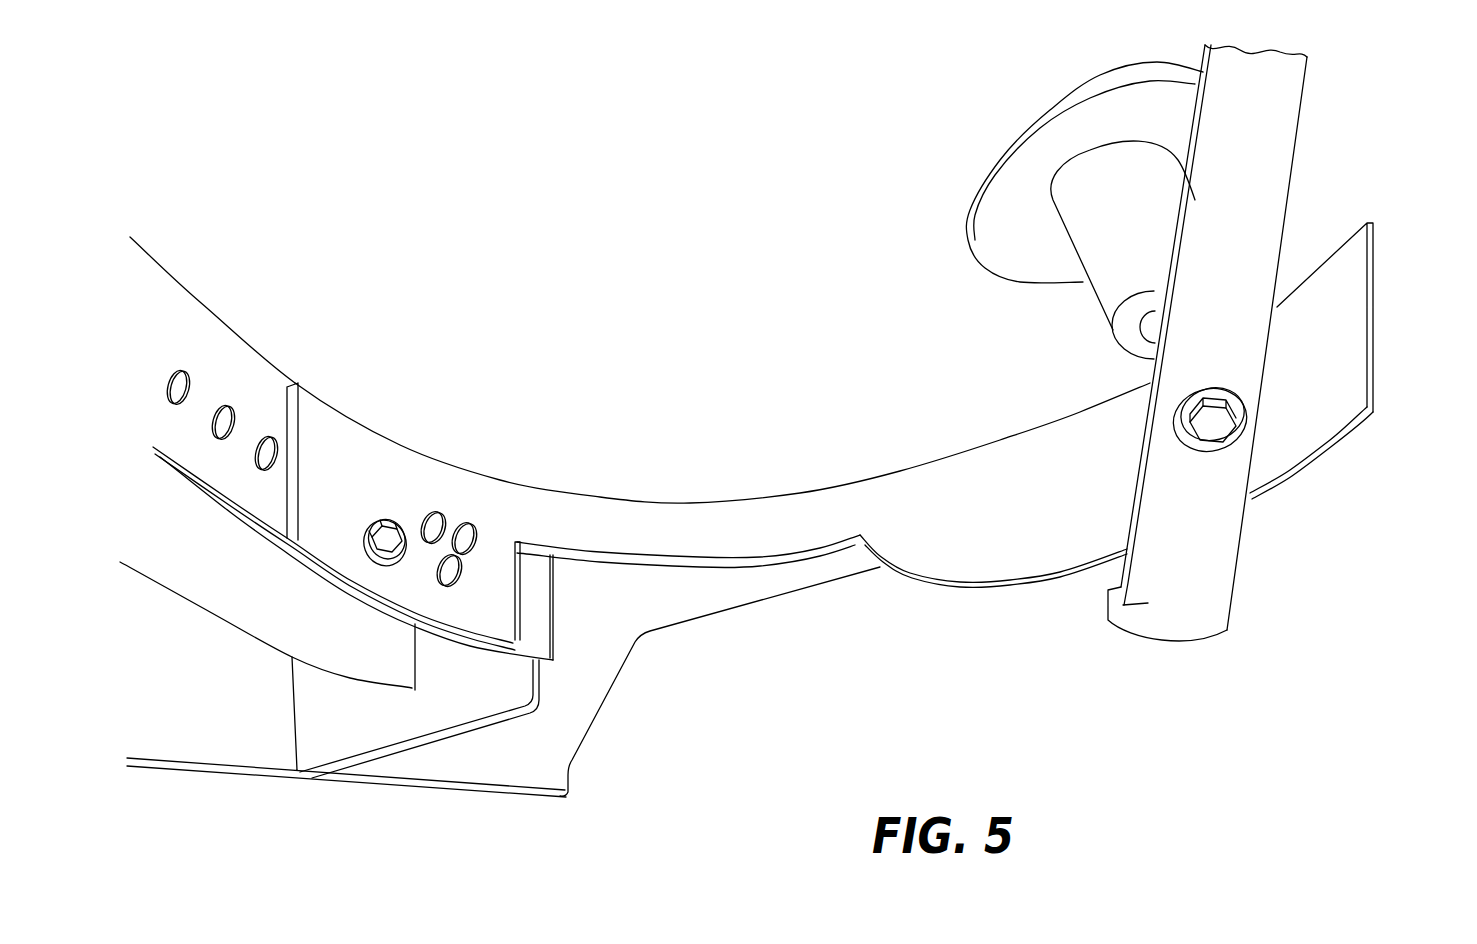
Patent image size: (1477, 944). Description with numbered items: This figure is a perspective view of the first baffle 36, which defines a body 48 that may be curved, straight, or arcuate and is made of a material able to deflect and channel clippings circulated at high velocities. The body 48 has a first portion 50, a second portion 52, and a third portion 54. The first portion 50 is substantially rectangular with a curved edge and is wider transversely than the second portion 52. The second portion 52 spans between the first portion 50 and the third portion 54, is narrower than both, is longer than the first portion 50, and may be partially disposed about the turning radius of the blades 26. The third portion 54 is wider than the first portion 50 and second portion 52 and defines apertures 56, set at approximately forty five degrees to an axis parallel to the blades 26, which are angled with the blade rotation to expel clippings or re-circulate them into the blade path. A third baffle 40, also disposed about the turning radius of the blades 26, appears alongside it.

The blades 26 is at (1192, 542).
The first baffle 36 is at (775, 485).
The third baffle 40 is at (175, 347).
The body 48 is at (1383, 218).
The first portion 50 is at (995, 548).
The second portion 52 is at (785, 523).
The third portion 54 is at (357, 457).
The apertures 56 is at (462, 537).